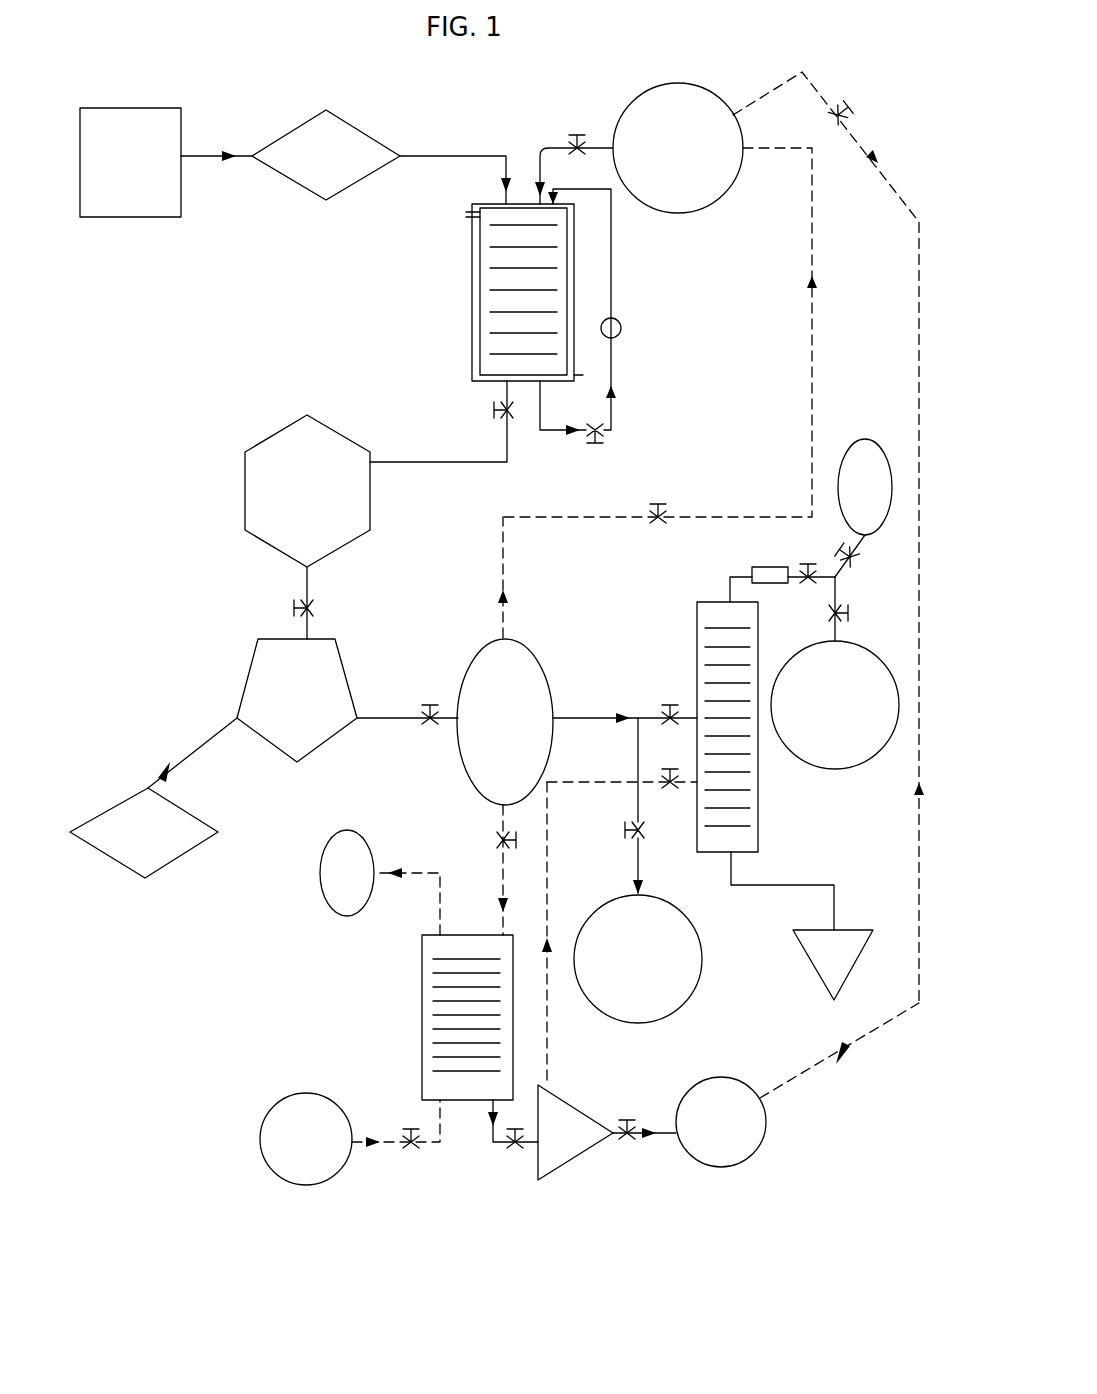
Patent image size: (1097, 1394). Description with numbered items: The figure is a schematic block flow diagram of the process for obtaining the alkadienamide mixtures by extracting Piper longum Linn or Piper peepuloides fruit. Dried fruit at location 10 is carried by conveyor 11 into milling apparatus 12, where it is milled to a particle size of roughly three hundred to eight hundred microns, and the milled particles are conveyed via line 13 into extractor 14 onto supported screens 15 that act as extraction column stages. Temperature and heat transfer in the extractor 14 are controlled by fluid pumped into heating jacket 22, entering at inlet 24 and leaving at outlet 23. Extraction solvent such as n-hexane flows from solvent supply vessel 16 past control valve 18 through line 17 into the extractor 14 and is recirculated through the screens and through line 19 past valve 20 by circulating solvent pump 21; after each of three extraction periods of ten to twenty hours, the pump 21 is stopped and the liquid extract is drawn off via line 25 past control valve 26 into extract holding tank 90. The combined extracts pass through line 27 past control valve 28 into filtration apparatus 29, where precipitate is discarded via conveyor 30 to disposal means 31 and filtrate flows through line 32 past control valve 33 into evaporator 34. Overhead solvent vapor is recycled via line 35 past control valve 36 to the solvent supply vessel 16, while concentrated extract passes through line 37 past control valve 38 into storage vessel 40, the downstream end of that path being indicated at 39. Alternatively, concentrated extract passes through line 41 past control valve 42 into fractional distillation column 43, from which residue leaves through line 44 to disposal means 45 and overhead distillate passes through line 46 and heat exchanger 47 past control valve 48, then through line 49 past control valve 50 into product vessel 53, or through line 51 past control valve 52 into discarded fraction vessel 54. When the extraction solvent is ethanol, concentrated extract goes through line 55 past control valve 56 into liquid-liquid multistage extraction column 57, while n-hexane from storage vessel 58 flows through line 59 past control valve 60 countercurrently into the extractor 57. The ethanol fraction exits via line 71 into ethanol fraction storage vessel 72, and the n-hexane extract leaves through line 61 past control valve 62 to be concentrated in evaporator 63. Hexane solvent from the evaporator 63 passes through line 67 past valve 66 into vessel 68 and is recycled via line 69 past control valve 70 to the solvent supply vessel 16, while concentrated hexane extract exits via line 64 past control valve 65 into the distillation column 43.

The location of dried fruit 10 is at (118, 218).
The conveyor 11 is at (210, 160).
The milling apparatus 12 is at (307, 192).
The line 13 is at (436, 152).
The extractor 14 is at (480, 322).
The supported screens 15 is at (507, 333).
The solvent supply vessel 16 is at (680, 83).
The line 17 is at (602, 144).
The control valve 18 is at (572, 132).
The line 19 is at (552, 436).
The valve 20 is at (606, 436).
The circulating solvent pump 21 is at (622, 328).
The heating jacket 22 is at (472, 280).
The outlet 23 is at (466, 214).
The inlet 24 is at (584, 375).
The line 25 is at (418, 466).
The control valve 26 is at (494, 422).
The line 27 is at (310, 580).
The control valve 28 is at (292, 606).
The filtration apparatus 29 is at (238, 704).
The conveyor 30 is at (194, 752).
The disposal means 31 is at (176, 858).
The line 32 is at (378, 722).
The control valve 33 is at (434, 728).
The evaporator 34 is at (470, 664).
The line 35 is at (504, 612).
The control valve 36 is at (652, 526).
The line 37 is at (574, 722).
The control valve 38 is at (624, 830).
The bypass outlet line 39 is at (636, 868).
The storage vessel 40 is at (690, 1008).
The line 41 is at (636, 712).
The control valve 42 is at (674, 702).
The fractional distillation column 43 is at (758, 810).
The line 44 is at (756, 888).
The disposal means 45 is at (862, 928).
The line 46 is at (740, 575).
The heat exchanger 47 is at (766, 566).
The control valve 48 is at (806, 564).
The line 49 is at (836, 594).
The control valve 50 is at (850, 622).
The line 51 is at (852, 554).
The control valve 52 is at (858, 560).
The product vessel 53 is at (860, 768).
The discarded fraction vessel 54 is at (866, 439).
The line 55 is at (503, 816).
The control valve 56 is at (496, 846).
The liquid-liquid multistage extraction column 57 is at (422, 1034).
The storage vessel 58 is at (260, 1138).
The line 59 is at (360, 1148).
The control valve 60 is at (416, 1150).
The line 61 is at (490, 1108).
The control valve 62 is at (514, 1152).
The evaporator 63 is at (568, 1164).
The line 64 is at (548, 1046).
The control valve 65 is at (672, 790).
The valve 66 is at (628, 1142).
The line 67 is at (660, 1130).
The vessel 68 is at (760, 1150).
The line 69 is at (826, 1068).
The control valve 70 is at (842, 104).
The line 71 is at (440, 868).
The ethanol fraction storage vessel 72 is at (344, 918).
The extract holding tank 90 is at (268, 425).